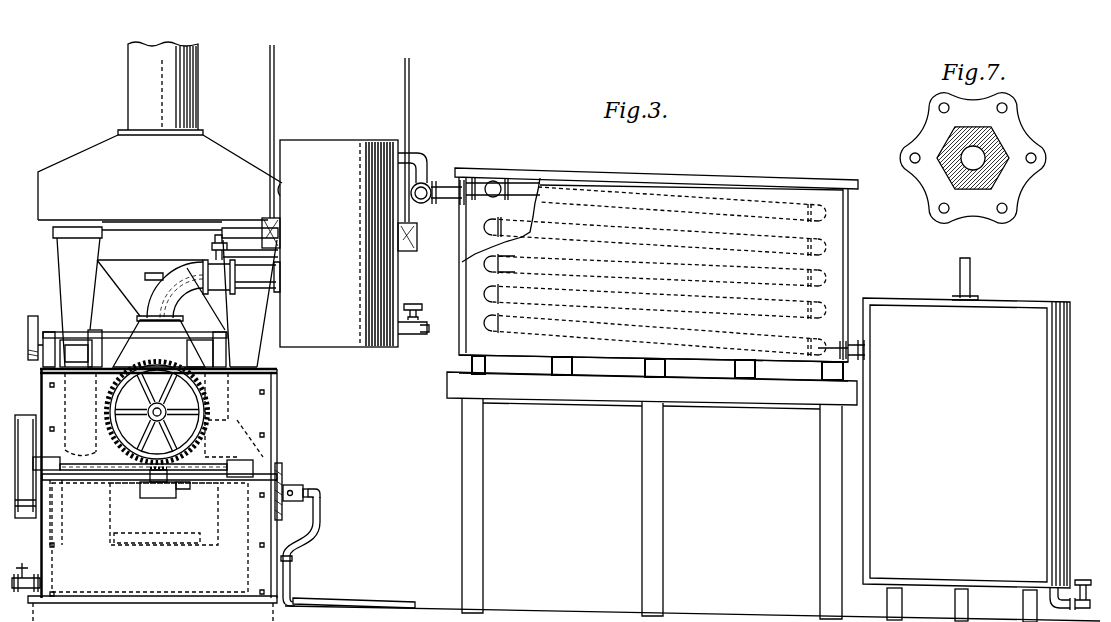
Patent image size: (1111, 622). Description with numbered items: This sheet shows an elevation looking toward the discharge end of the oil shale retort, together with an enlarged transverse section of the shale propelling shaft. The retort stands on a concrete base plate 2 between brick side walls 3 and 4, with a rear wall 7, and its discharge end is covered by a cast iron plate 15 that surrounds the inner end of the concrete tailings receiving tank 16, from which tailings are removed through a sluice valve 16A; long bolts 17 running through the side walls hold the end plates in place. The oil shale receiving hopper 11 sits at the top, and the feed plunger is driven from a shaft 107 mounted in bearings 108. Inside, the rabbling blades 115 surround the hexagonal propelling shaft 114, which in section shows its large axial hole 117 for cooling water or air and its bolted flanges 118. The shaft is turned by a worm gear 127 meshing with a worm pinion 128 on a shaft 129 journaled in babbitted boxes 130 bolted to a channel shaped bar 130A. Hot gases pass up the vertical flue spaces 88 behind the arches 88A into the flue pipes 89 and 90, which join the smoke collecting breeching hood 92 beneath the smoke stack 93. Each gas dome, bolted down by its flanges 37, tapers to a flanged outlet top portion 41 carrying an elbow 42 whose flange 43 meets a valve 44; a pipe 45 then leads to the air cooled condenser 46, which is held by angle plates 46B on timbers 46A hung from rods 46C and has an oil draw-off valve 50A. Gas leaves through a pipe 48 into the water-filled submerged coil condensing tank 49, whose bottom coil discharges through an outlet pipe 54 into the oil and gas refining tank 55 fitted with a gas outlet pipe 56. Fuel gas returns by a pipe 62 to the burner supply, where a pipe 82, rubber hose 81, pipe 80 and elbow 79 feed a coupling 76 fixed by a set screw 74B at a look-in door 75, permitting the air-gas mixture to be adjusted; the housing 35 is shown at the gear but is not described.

In FIG. 3, the base plate 2 is at (18, 440).
In FIG. 3, the side wall 3 is at (40, 371).
In FIG. 3, the side wall 4 is at (278, 388).
In FIG. 3, the rear wall 7 is at (265, 425).
In FIG. 3, the oil shale receiving hopper 11 is at (118, 262).
In FIG. 3, the cast iron plate 15 is at (48, 395).
In FIG. 3, the tailings receiving tank 16 is at (149, 536).
In FIG. 3, the sluice valve 16A is at (23, 568).
In FIG. 3, the long bolts 17 is at (255, 560).
In FIG. 3, the gear housing 35 is at (159, 341).
In FIG. 3, the outwardly projecting flanges 37 is at (136, 353).
In FIG. 3, the flanged outlet top portion 41 is at (119, 288).
In FIG. 3, the elbow 42 is at (190, 278).
In FIG. 3, the flange 43 is at (206, 258).
In FIG. 3, the valve 44 is at (222, 296).
In FIG. 3, the pipe 45 is at (252, 282).
In FIG. 3, the air cooled condenser 46 is at (339, 243).
In FIG. 3, the parallel timbers 46A is at (408, 254).
In FIG. 3, the angle plates 46B is at (281, 194).
In FIG. 3, the rods 46C is at (392, 83).
In FIG. 3, the pipe 48 is at (448, 150).
In FIG. 3, the submerged coil condensing tank 49 is at (515, 175).
In FIG. 3, the oil draw-off valve 50A is at (424, 334).
In FIG. 3, the outlet pipe 54 is at (858, 345).
In FIG. 3, the oil and gas refining tank 55 is at (542, 232).
In FIG. 3, the gas outlet pipe 56 is at (972, 272).
In FIG. 3, the pipe 62 is at (336, 600).
In FIG. 3, the set screw 74B is at (290, 482).
In FIG. 3, the look-in door 75 is at (291, 485).
In FIG. 3, the coupling 76 is at (312, 486).
In FIG. 3, the elbow 79 is at (322, 490).
In FIG. 3, the pipe 80 is at (322, 508).
In FIG. 3, the rubber hose 81 is at (316, 536).
In FIG. 3, the pipe 82 is at (290, 575).
In FIG. 3, the vertical flue spaces 88 is at (228, 414).
In FIG. 3, the arches 88A is at (226, 390).
In FIG. 3, the flue pipe 89 is at (62, 278).
In FIG. 3, the flue pipe 90 is at (246, 349).
In FIG. 3, the smoke collecting breeching hood 92 is at (160, 180).
In FIG. 3, the smoke stack 93 is at (198, 80).
In FIG. 3, the shaft 107 is at (116, 334).
In FIG. 3, the bearings 108 is at (215, 334).
In FIG. 7, the oil shale propelling shaft 114 is at (972, 188).
In FIG. 3, the rabbling blades 115 is at (145, 277).
In FIG. 7, the axial hole 117 is at (971, 150).
In FIG. 7, the flanges 118 is at (1016, 130).
In FIG. 3, the worm gear 127 is at (186, 416).
In FIG. 3, the worm pinion 128 is at (145, 484).
In FIG. 3, the shaft 129 is at (86, 480).
In FIG. 3, the babbitted boxes 130 is at (240, 464).
In FIG. 3, the channel shaped bar 130A is at (194, 490).